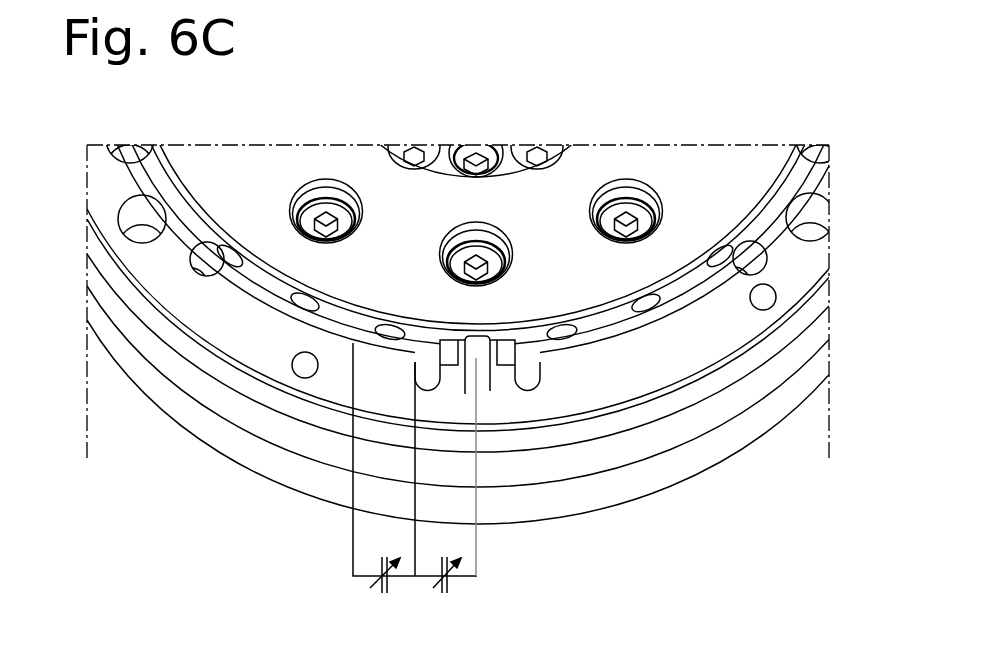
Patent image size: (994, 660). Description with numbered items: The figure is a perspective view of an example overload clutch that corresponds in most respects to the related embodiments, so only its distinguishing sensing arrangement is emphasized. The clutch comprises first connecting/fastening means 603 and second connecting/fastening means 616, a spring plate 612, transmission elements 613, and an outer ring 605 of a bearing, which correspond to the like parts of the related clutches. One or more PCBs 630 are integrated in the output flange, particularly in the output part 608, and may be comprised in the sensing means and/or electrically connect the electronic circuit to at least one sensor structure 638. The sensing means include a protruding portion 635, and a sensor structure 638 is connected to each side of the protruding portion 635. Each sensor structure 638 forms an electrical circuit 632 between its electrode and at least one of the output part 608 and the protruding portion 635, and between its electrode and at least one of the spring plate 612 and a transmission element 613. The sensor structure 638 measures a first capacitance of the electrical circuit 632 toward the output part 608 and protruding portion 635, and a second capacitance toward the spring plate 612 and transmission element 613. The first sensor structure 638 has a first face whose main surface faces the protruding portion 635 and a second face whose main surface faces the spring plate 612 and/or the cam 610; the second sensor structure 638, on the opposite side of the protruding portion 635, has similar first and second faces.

The first connecting/fastening means 603 is at (492, 157).
The outer ring 605 is at (308, 473).
The output part 608 is at (262, 415).
The cam 610 is at (555, 204).
The spring plate 612 is at (220, 320).
The transmission elements 613 is at (235, 255).
The second connecting/fastening means 616 is at (323, 222).
The PCBs 630 is at (669, 327).
The electrical circuit 632 is at (353, 558).
The protruding portion 635 is at (476, 346).
The sensor structure 638 is at (510, 358).